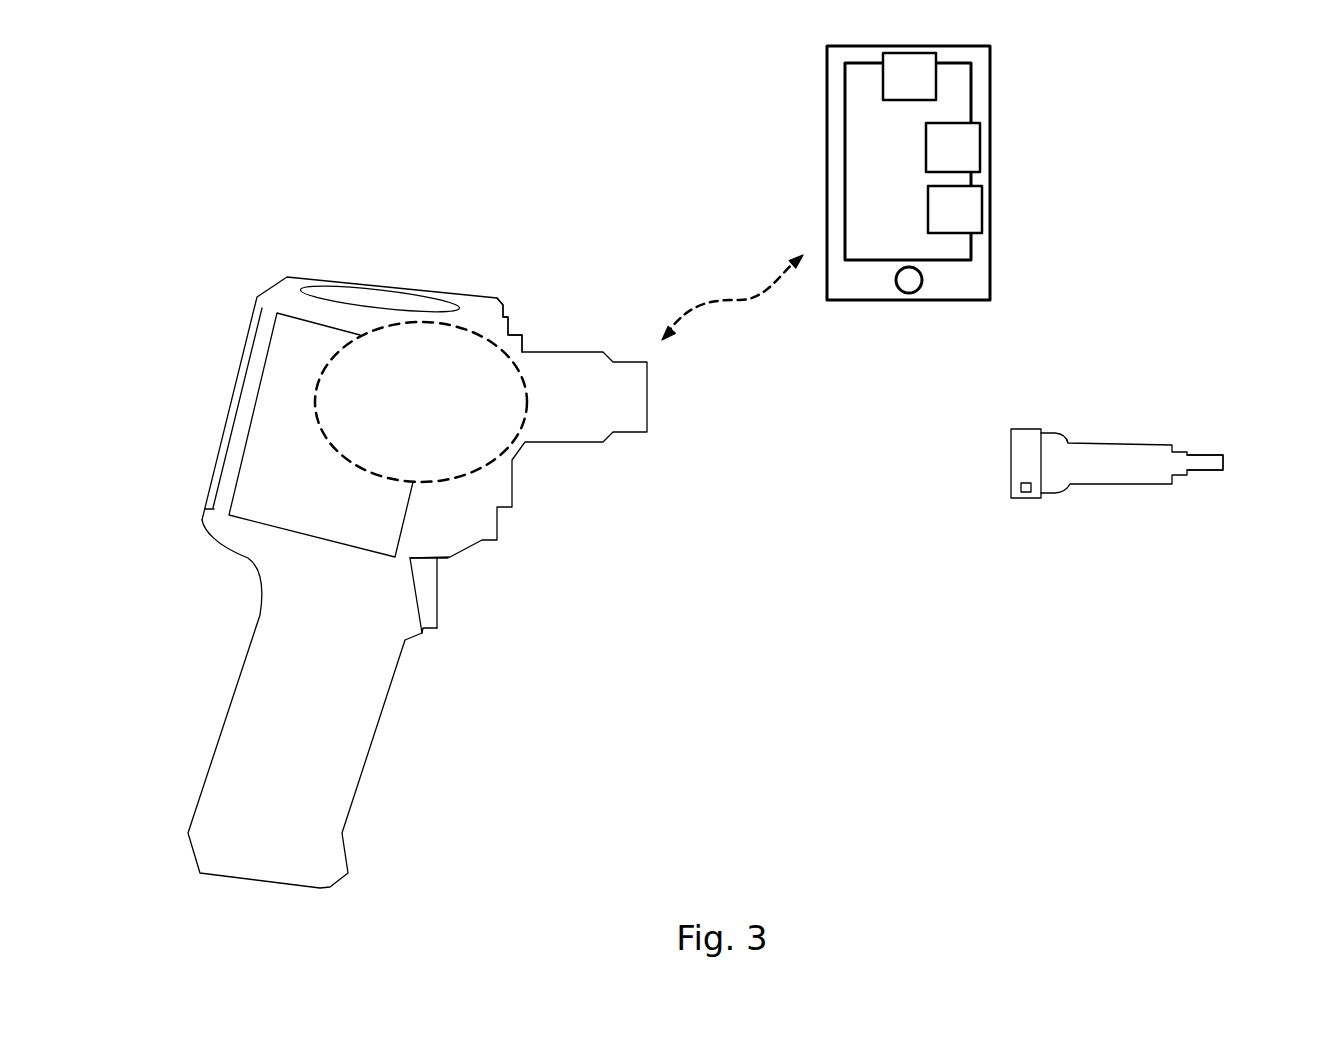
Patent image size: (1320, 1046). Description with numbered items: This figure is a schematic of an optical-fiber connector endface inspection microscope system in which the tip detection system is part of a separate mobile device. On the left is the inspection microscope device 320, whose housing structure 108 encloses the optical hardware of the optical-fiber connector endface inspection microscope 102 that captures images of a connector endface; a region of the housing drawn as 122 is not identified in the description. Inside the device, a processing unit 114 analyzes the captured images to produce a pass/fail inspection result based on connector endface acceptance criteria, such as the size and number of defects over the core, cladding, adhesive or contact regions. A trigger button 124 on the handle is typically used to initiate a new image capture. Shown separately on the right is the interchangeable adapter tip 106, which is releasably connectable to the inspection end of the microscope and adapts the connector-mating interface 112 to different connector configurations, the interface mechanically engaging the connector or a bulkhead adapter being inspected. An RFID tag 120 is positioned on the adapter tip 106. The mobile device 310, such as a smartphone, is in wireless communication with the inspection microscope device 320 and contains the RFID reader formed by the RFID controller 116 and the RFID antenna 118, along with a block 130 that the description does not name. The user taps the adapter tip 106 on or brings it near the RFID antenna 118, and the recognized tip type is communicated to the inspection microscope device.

The optical-fiber connector endface inspection microscope 102 is at (403, 460).
The interchangeable adapter tip 106 is at (1128, 442).
The housing structure 108 is at (265, 293).
The connector-mating interface 112 is at (1208, 473).
The processing unit 114 is at (349, 534).
The RFID controller 116 is at (935, 159).
The RFID antenna 118 is at (937, 221).
The RFID tag 120 is at (1030, 495).
The side strip 122 is at (236, 387).
The trigger button 124 is at (437, 600).
The display 130 is at (891, 88).
The mobile device 310 is at (950, 173).
The inspection microscope device 320 is at (498, 300).